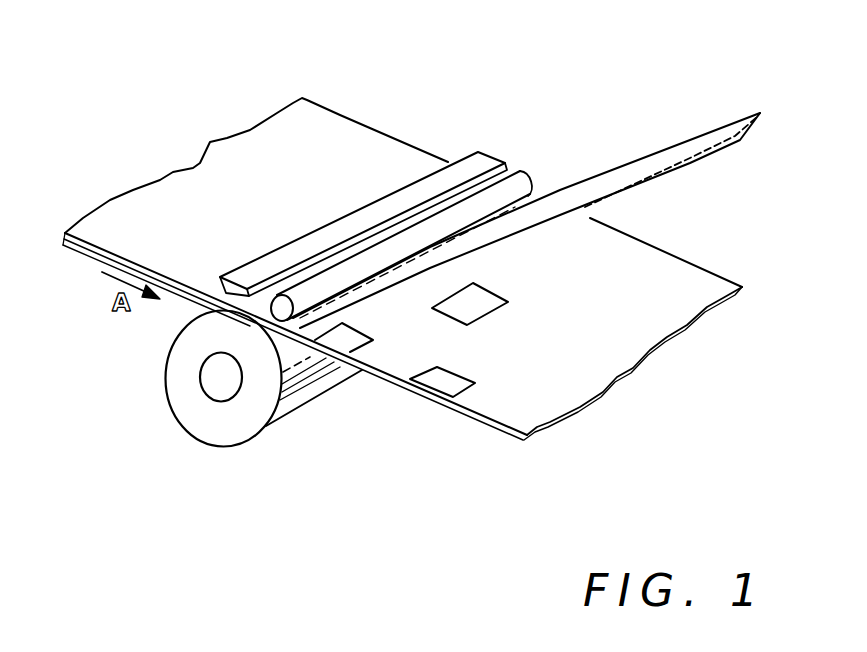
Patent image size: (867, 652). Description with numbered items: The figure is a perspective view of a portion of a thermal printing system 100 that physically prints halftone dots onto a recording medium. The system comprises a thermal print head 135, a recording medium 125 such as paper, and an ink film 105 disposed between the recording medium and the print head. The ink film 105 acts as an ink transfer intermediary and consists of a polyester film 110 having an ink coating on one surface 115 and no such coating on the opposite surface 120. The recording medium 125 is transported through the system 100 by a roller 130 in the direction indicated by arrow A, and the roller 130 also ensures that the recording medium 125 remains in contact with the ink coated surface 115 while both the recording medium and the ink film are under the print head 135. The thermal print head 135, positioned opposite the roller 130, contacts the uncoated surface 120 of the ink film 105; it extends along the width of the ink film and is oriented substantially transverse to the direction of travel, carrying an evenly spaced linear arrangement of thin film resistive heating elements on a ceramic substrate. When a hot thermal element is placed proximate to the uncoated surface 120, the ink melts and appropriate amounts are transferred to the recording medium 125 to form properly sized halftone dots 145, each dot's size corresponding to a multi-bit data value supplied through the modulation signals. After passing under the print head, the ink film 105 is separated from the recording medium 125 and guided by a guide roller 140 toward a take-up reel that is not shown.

The thermal printing system 100 is at (126, 98).
The ink film 105 is at (340, 114).
The polyester film 110 is at (716, 157).
The ink coated surface 115 is at (664, 184).
The uncoated surface 120 is at (138, 203).
The recording medium 125 is at (631, 295).
The roller 130 is at (170, 349).
The thermal print head 135 is at (481, 162).
The guide roller 140 is at (531, 182).
The halftone dot 145 is at (490, 300).